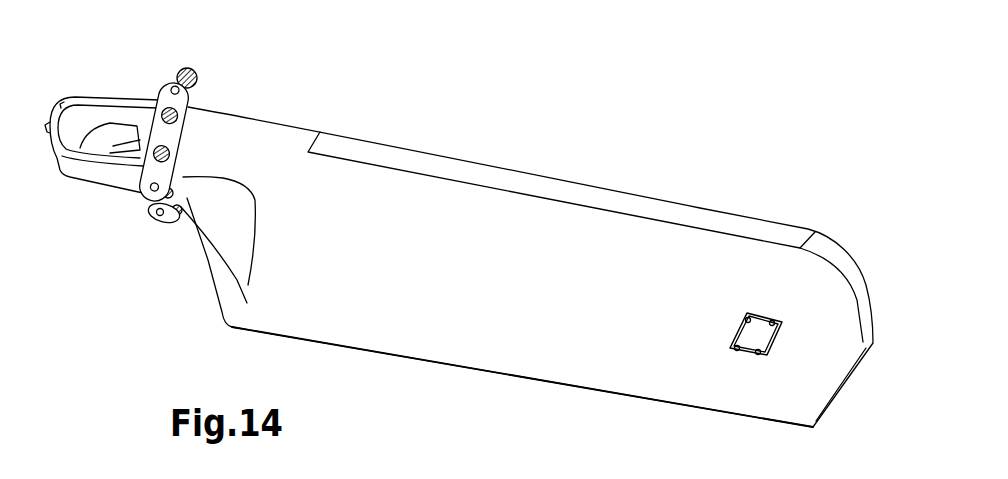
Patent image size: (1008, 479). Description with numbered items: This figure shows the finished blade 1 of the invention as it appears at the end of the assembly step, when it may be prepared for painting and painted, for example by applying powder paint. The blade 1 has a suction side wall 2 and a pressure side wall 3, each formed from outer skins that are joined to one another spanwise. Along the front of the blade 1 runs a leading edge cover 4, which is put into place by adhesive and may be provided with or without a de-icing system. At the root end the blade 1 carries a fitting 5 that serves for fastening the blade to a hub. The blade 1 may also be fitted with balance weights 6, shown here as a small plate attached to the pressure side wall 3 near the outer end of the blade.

The blade 1 is at (459, 265).
The suction side wall 2 is at (603, 257).
The pressure side wall 3 is at (505, 381).
The leading edge cover 4 is at (507, 180).
The fitting 5 is at (170, 134).
The balance weights 6 is at (747, 333).